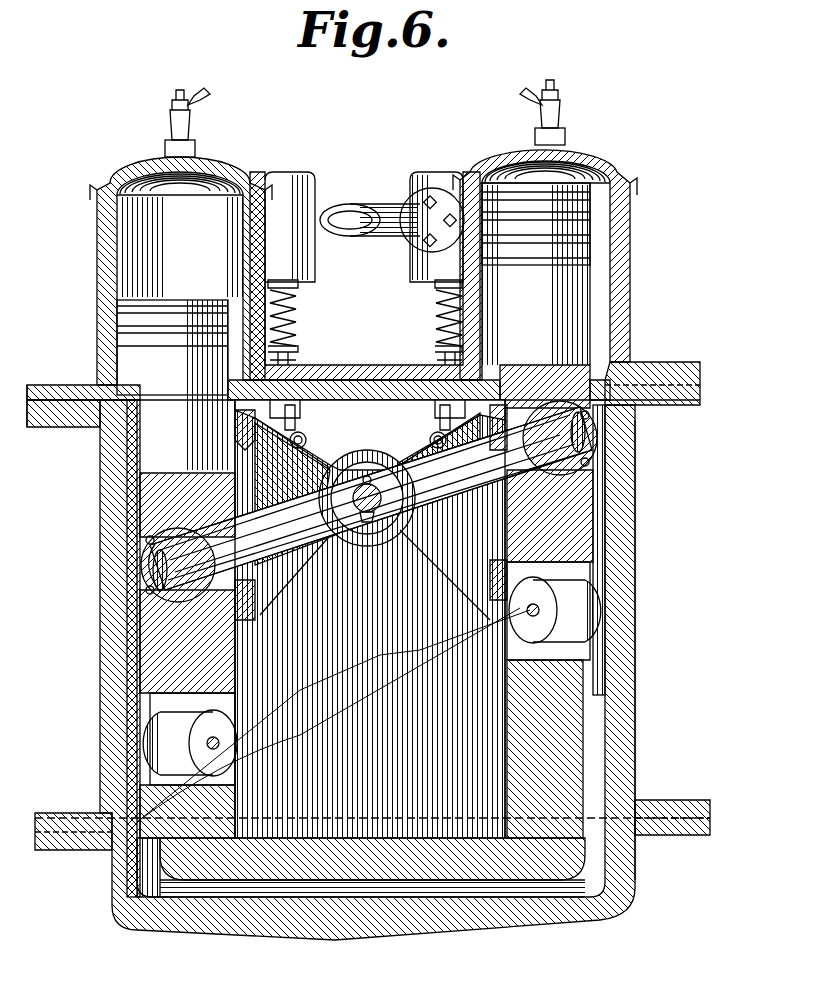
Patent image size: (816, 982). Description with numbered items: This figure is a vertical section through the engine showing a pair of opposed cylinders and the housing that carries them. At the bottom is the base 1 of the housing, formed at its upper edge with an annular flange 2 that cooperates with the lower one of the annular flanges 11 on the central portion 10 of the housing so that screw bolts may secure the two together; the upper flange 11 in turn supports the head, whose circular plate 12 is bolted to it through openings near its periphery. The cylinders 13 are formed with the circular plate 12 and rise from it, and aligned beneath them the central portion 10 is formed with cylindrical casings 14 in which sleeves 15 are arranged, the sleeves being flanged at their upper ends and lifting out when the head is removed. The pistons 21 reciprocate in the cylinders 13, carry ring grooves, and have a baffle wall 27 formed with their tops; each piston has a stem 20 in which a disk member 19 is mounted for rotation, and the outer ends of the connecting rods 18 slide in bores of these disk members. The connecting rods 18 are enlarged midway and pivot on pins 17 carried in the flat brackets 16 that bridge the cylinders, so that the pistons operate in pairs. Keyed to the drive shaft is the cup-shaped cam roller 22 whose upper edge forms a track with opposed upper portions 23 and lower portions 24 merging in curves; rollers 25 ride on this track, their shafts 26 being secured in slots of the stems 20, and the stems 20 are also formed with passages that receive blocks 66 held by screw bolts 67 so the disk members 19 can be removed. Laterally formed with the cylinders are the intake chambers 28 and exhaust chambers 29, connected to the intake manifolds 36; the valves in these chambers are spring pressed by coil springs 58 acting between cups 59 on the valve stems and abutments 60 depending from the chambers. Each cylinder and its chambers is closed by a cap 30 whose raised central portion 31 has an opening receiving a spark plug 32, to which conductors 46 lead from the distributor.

The base 1 is at (418, 926).
The annular flange 2 is at (90, 840).
The central portion of the housing 10 is at (627, 633).
The annular flanges 11 is at (682, 404).
The circular plate 12 is at (345, 378).
The cylinders 13 is at (100, 240).
The cylindrical casings 14 is at (400, 520).
The sleeves 15 is at (140, 640).
The flat brackets 16 is at (440, 525).
The pins 17 is at (378, 480).
The connecting rods 18 is at (380, 492).
The disk members 19 is at (148, 600).
The stems 20 is at (160, 487).
The pistons 21 is at (200, 330).
The cam roller 22 is at (272, 860).
The upper portions 23 is at (470, 650).
The lower portions 24 is at (137, 822).
The rollers 25 is at (195, 738).
The shafts 26 is at (207, 748).
The baffle wall 27 is at (195, 182).
The intake chambers 28 is at (425, 250).
The exhaust chambers 29 is at (300, 225).
The caps 30 is at (265, 185).
The raised central portion 31 is at (196, 150).
The spark plug 32 is at (190, 128).
The intake manifolds 36 is at (395, 228).
The conductors 46 is at (198, 98).
The coil springs 58 is at (295, 325).
The cups 59 is at (298, 350).
The abutments 60 is at (299, 283).
The blocks 66 is at (155, 580).
The screw bolts 67 is at (150, 542).